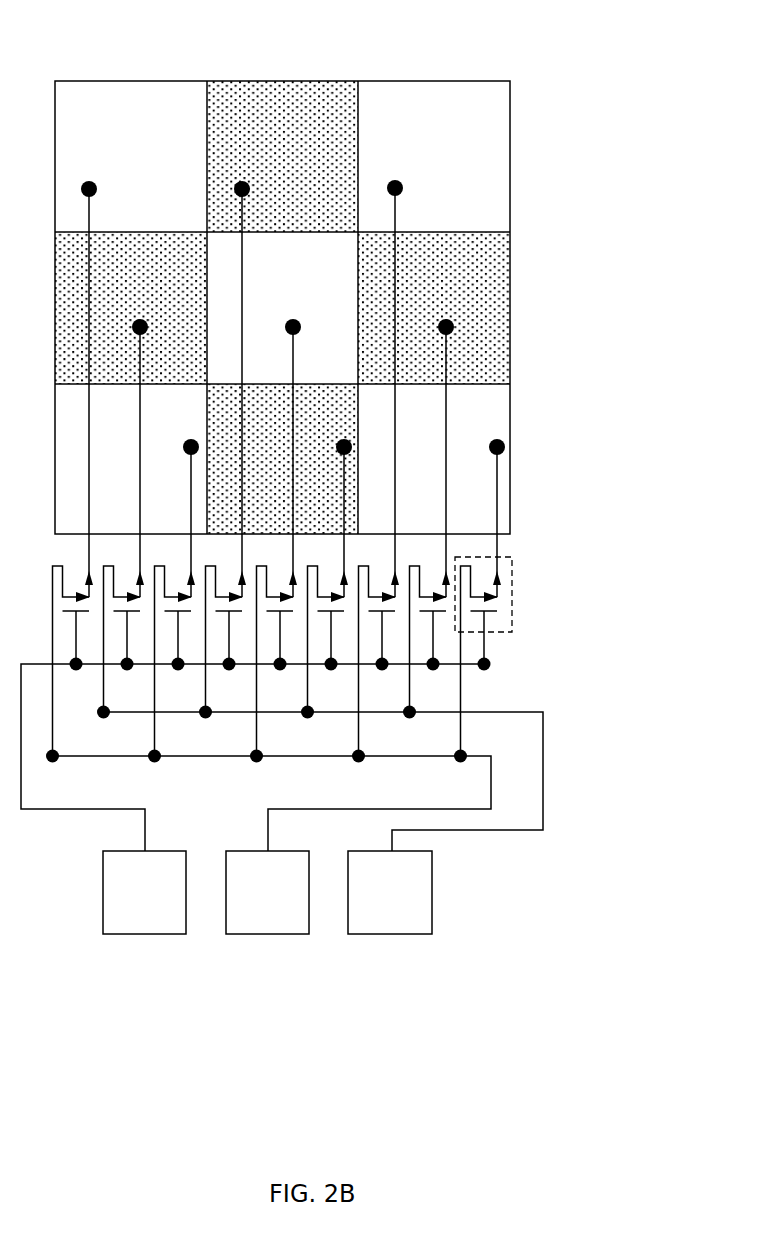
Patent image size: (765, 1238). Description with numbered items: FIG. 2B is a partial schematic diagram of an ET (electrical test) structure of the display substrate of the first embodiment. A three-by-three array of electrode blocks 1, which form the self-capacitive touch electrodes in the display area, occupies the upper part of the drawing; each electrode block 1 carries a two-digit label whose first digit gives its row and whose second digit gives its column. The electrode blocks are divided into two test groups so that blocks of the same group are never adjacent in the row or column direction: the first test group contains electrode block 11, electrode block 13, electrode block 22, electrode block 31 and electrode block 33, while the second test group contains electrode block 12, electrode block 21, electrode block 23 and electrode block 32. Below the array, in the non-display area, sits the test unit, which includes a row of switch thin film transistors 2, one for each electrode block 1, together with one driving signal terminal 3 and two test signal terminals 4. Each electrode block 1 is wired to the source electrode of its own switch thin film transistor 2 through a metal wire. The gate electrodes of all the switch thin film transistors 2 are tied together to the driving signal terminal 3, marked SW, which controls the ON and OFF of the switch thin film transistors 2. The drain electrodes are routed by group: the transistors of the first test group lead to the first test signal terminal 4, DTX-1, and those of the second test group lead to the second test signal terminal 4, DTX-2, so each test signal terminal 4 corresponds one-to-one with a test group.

The electrode block 1 is at (284, 101).
The switch thin film transistor 2 is at (512, 592).
The driving signal terminal 3 is at (161, 934).
The test signal terminal 4 is at (306, 934).
The electrode block 11 is at (131, 156).
The electrode block 12 is at (282, 156).
The electrode block 13 is at (434, 156).
The electrode block 21 is at (131, 308).
The electrode block 22 is at (282, 308).
The electrode block 23 is at (434, 308).
The electrode block 31 is at (131, 459).
The electrode block 32 is at (282, 459).
The electrode block 33 is at (434, 459).